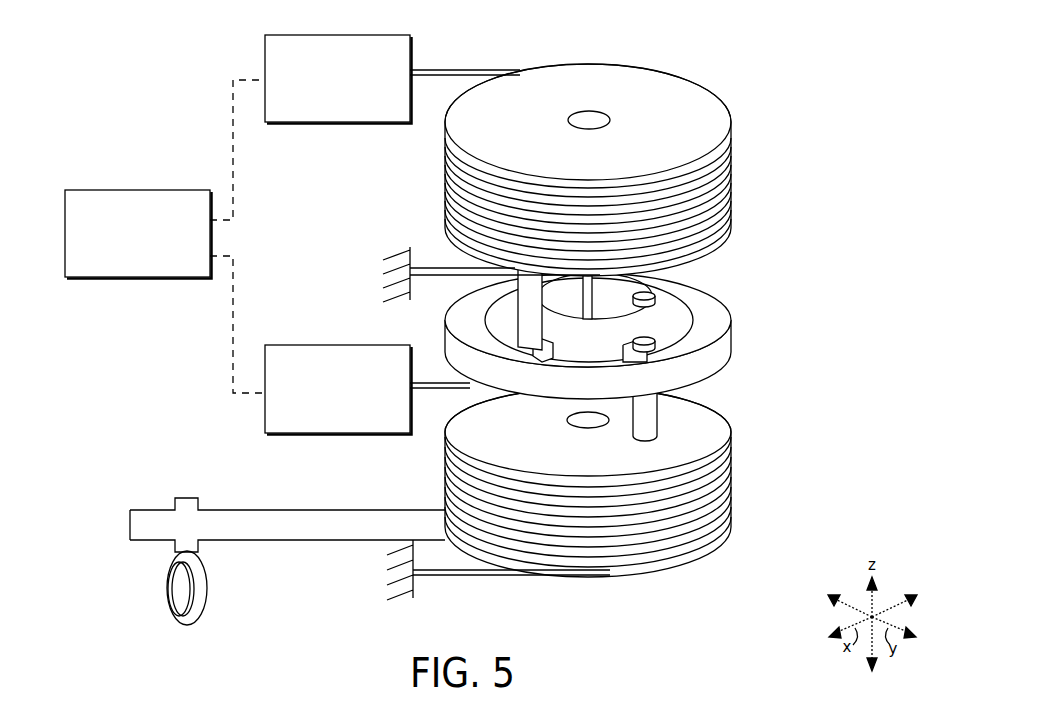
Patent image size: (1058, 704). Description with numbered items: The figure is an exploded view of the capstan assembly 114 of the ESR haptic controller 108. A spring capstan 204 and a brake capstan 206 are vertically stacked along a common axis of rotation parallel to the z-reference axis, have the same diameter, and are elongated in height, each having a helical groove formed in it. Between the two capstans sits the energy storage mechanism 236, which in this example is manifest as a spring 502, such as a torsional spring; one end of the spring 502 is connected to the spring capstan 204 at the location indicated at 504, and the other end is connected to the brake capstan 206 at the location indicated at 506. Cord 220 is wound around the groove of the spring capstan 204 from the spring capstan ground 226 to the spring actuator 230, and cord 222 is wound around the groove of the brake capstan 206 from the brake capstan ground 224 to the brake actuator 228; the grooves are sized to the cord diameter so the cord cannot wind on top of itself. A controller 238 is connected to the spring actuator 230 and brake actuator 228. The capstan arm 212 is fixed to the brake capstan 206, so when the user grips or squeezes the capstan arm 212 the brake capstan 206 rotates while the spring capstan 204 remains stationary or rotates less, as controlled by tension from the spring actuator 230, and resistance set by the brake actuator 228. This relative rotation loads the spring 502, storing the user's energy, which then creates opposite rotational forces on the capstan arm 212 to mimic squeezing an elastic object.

The ESR haptic controller 108 is at (167, 79).
The capstan assembly 114 is at (794, 60).
The spring capstan 204 is at (645, 170).
The brake capstan 206 is at (665, 480).
The capstan arm 212 is at (130, 510).
The cord 220 is at (443, 70).
The cord 222 is at (488, 577).
The brake capstan ground 224 is at (360, 594).
The spring capstan ground 226 is at (450, 265).
The brake actuator 228 is at (321, 427).
The spring actuator 230 is at (321, 116).
The energy storage mechanism 236 is at (665, 312).
The controller 238 is at (120, 261).
The spring 502 is at (731, 345).
The spring connection to spring capstan 504 is at (517, 320).
The spring connection to brake capstan 506 is at (660, 412).